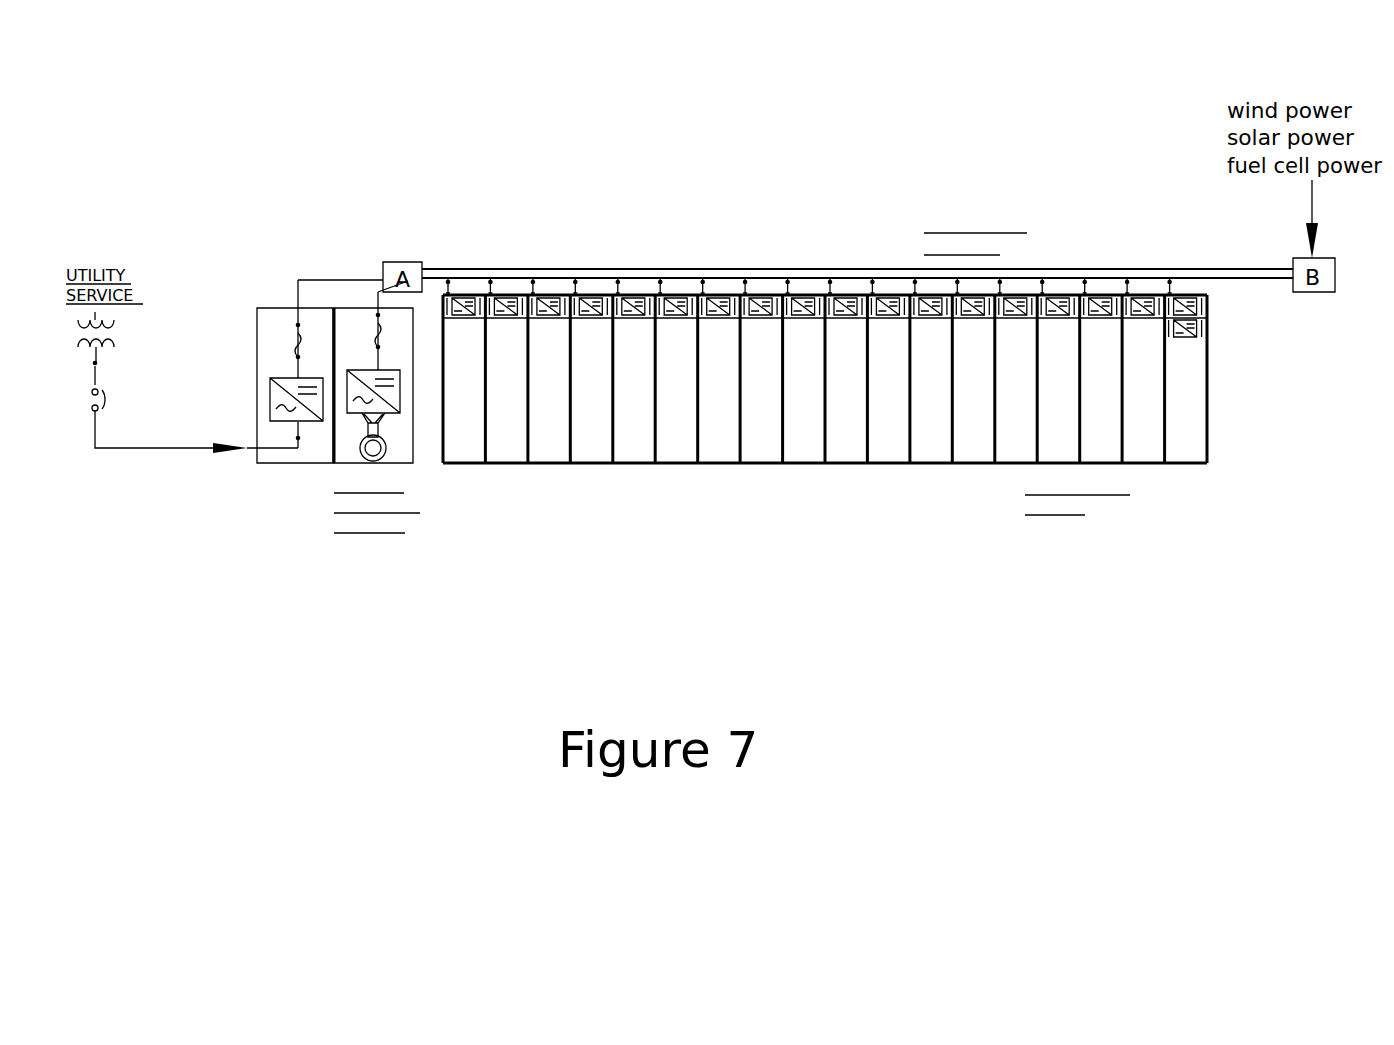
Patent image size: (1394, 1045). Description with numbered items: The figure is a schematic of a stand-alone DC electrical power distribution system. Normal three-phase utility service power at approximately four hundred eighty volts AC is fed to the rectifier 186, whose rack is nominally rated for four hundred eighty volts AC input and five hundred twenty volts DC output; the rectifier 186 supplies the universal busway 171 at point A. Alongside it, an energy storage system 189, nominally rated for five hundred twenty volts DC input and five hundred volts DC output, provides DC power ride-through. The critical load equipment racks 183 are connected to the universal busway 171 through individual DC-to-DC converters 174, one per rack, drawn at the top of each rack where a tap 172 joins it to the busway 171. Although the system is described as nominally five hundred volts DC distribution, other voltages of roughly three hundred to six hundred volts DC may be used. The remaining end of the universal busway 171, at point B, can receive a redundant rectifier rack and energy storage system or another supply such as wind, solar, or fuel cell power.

The universal busway 171 is at (752, 270).
The busway tap connector 172 is at (1210, 288).
The DC-to-DC converter 174 is at (1223, 347).
The critical load equipment rack 183 is at (891, 424).
The rectifier 186 is at (277, 348).
The energy storage system 189 is at (397, 437).